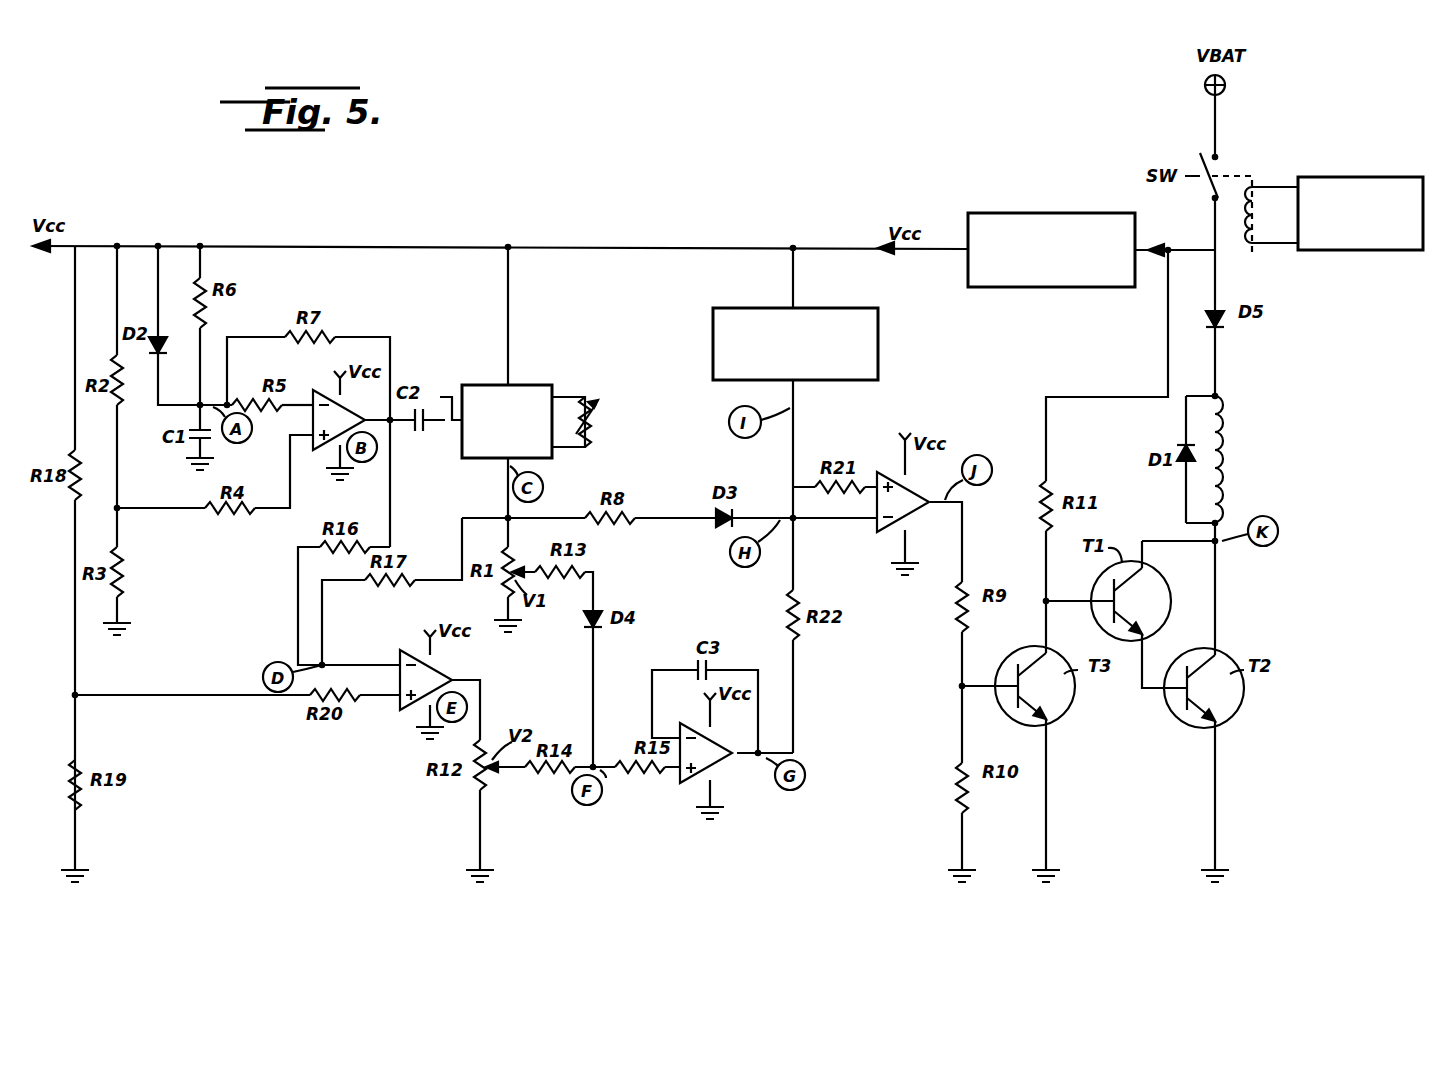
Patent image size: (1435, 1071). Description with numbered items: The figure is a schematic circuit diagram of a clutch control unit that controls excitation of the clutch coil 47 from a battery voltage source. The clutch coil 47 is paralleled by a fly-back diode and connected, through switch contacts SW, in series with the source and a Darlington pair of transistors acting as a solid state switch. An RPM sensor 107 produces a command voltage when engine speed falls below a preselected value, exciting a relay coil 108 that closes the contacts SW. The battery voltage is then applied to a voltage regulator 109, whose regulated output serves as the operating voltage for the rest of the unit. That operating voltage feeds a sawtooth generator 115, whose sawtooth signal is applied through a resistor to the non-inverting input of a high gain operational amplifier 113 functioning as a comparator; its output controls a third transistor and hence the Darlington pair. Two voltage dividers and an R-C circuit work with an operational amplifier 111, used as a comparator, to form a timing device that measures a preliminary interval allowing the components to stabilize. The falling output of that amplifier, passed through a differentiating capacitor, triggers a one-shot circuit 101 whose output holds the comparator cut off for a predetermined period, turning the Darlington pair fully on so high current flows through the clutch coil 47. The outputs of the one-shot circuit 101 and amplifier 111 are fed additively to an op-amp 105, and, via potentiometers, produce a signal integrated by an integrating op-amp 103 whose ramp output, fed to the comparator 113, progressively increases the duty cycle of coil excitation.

The clutch coil 47 is at (1228, 472).
The one-shot circuit 101 is at (520, 385).
The integrating op-amp 103 is at (712, 760).
The op-amp 105 is at (440, 670).
The RPM sensor 107 is at (1338, 177).
The relay coil 108 is at (1260, 207).
The voltage regulator 109 is at (1030, 213).
The operational amplifier 111 is at (326, 455).
The operational amplifier 113 is at (892, 470).
The sawtooth generator 115 is at (850, 310).